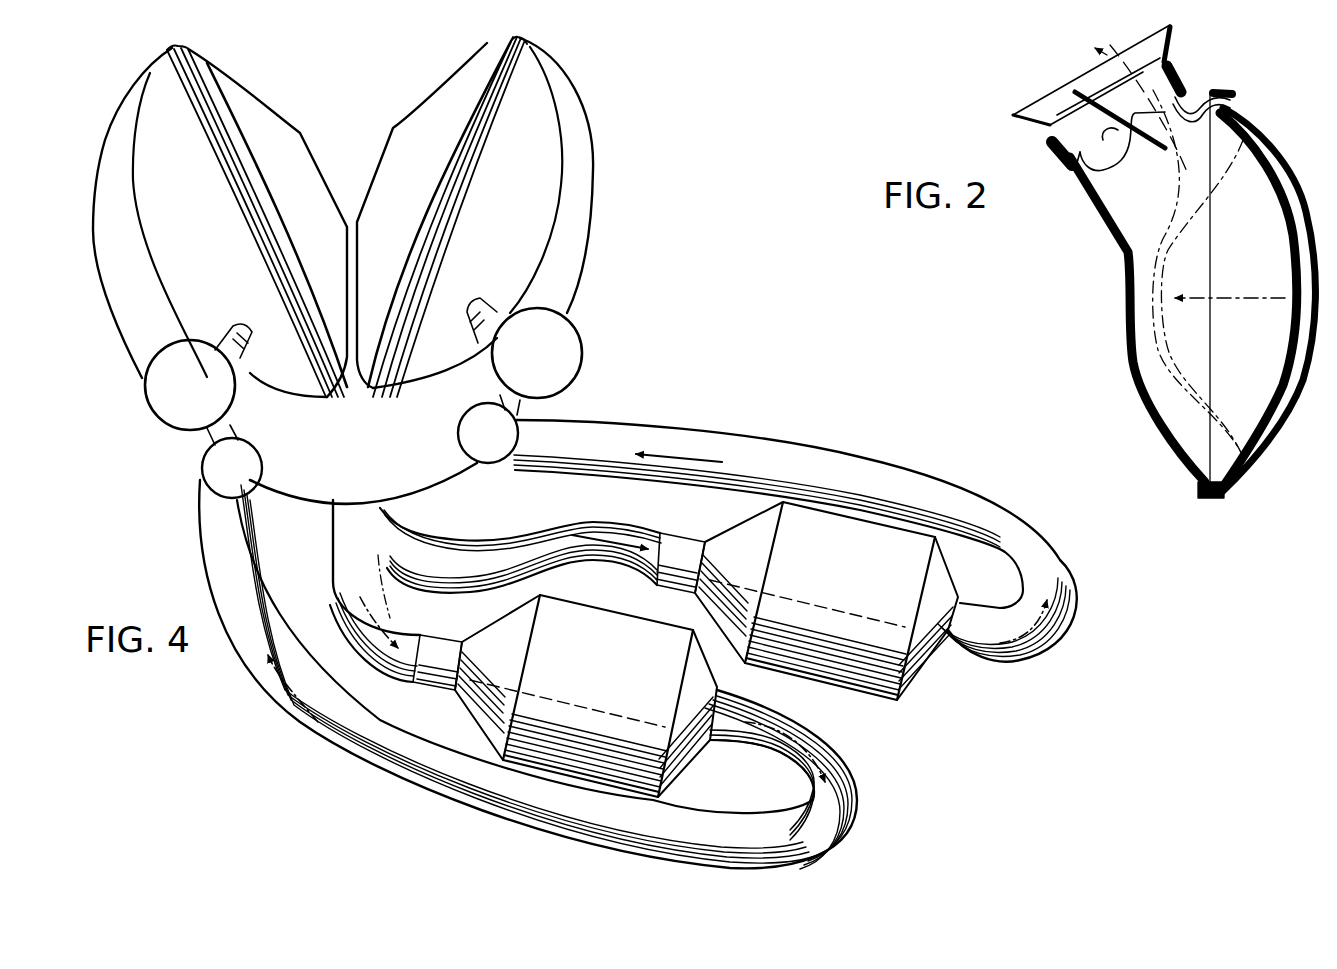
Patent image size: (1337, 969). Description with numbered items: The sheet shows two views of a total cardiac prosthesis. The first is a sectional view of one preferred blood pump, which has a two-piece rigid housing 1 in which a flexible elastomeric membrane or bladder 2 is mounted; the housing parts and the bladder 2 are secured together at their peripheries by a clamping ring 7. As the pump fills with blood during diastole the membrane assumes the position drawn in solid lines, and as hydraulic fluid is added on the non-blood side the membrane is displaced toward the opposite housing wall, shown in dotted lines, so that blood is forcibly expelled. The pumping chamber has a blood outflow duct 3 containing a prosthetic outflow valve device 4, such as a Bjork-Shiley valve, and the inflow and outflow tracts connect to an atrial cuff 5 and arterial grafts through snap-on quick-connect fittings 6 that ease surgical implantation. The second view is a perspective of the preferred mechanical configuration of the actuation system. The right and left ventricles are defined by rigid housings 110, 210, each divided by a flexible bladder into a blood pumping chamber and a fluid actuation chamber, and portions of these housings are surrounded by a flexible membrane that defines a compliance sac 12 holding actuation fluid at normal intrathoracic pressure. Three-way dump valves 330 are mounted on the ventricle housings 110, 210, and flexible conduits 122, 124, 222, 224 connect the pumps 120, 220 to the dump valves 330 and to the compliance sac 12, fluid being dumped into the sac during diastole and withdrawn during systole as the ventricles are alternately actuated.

In FIG. 2, the rigid housing 1 is at (1272, 158).
In FIG. 2, the bladder 2 is at (1175, 226).
In FIG. 2, the blood outflow duct 3 is at (1100, 206).
In FIG. 2, the prosthetic outflow valve device 4 is at (1090, 105).
In FIG. 2, the atrial cuff 5 is at (1172, 46).
In FIG. 2, the snap-on quick-connect fitting 6 is at (1185, 76).
In FIG. 2, the clamping ring 7 is at (1215, 95).
In FIG. 4, the compliance sac 12 is at (123, 272).
In FIG. 4, the rigid housing 110 is at (150, 165).
In FIG. 4, the pump 120 is at (606, 713).
In FIG. 4, the flexible conduit 122 is at (355, 612).
In FIG. 4, the flexible conduit 124 is at (220, 547).
In FIG. 4, the rigid housing 210 is at (528, 180).
In FIG. 4, the pump 220 is at (852, 613).
In FIG. 4, the flexible conduit 222 is at (546, 527).
In FIG. 4, the flexible conduit 224 is at (752, 442).
In FIG. 4, the three-way dump valve 330 is at (165, 403).